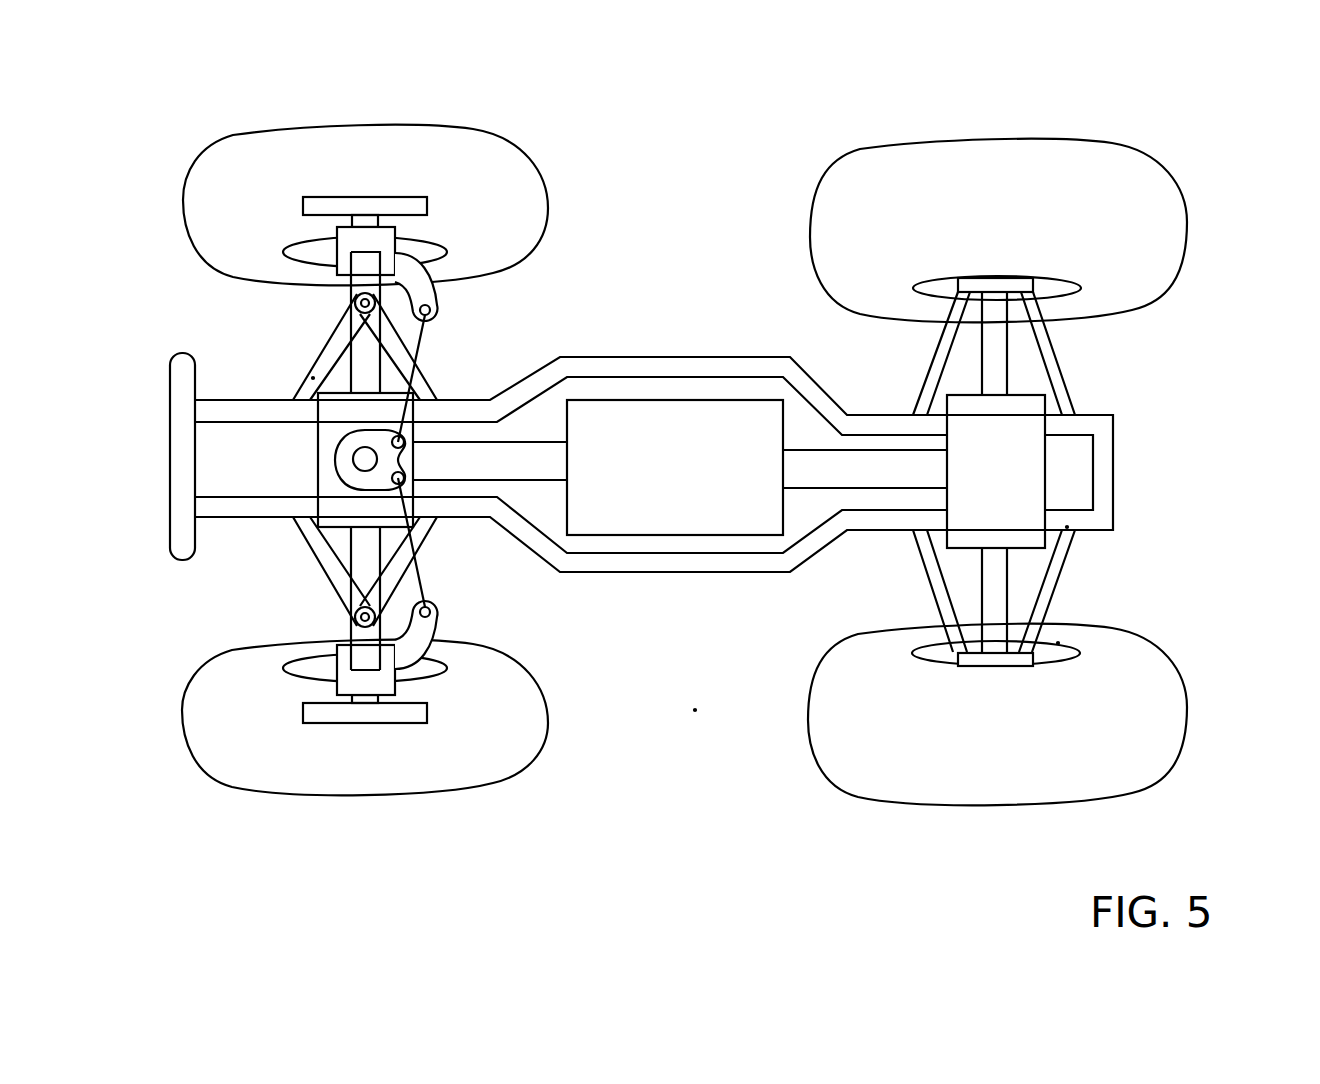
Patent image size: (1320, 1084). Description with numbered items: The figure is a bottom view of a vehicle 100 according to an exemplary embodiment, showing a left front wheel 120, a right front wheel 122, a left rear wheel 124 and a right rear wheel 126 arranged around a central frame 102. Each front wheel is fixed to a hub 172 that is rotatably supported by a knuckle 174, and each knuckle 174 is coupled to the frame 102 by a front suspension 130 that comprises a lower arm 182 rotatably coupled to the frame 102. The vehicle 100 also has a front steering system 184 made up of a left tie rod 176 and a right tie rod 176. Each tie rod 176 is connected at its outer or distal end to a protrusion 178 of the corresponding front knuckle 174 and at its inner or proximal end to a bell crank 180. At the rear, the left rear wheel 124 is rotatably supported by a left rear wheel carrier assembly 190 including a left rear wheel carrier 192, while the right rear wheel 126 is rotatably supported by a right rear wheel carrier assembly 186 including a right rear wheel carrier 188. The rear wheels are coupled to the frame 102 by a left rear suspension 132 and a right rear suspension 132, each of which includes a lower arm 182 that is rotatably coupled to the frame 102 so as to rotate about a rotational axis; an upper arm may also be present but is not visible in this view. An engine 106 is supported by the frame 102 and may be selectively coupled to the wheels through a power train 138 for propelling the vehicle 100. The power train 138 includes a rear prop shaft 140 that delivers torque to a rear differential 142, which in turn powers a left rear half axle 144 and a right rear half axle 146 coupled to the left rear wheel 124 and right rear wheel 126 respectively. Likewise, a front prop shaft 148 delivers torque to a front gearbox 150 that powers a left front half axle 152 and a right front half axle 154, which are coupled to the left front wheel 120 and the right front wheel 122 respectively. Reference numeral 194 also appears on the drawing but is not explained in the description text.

The vehicle 100 is at (695, 711).
The frame 102 is at (623, 366).
The engine 106 is at (647, 489).
The left front wheel 120 is at (232, 728).
The right front wheel 122 is at (413, 163).
The left rear wheel 124 is at (1130, 740).
The right rear wheel 126 is at (1133, 208).
The front suspension 130 is at (428, 380).
The rear suspension 132 is at (1050, 580).
The power train 138 is at (805, 485).
The rear prop shaft 140 is at (863, 475).
The rear differential 142 is at (1015, 468).
The left rear half axle 144 is at (993, 630).
The right rear half axle 146 is at (993, 316).
The front prop shaft 148 is at (504, 472).
The front gearbox 150 is at (333, 489).
The left front half axle 152 is at (355, 586).
The right front half axle 154 is at (360, 363).
The hub 172 is at (318, 196).
The knuckle 174 is at (340, 252).
The tie rod 176 is at (424, 578).
The protrusion 178 is at (433, 631).
The bell crank 180 is at (340, 444).
The lower arm 182 is at (313, 377).
The front steering system 184 is at (303, 463).
The right rear wheel carrier assembly 186 is at (1042, 288).
The right rear wheel carrier 188 is at (955, 288).
The left rear wheel carrier assembly 190 is at (1059, 642).
The left rear wheel carrier 192 is at (956, 652).
The wheel mounting plate 194 is at (366, 705).